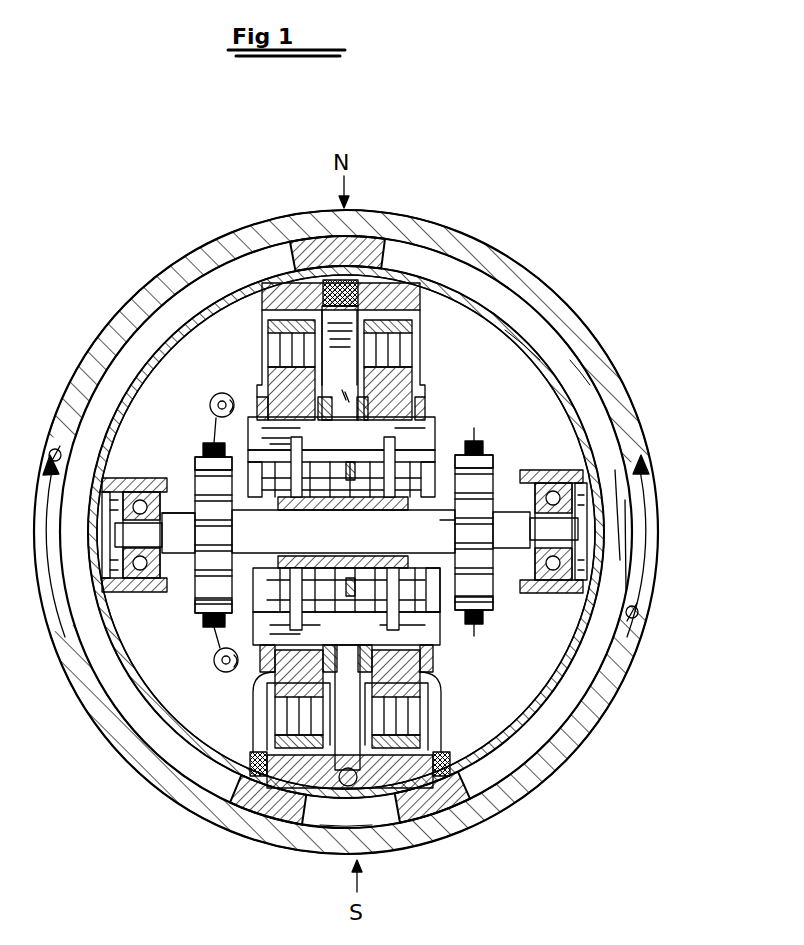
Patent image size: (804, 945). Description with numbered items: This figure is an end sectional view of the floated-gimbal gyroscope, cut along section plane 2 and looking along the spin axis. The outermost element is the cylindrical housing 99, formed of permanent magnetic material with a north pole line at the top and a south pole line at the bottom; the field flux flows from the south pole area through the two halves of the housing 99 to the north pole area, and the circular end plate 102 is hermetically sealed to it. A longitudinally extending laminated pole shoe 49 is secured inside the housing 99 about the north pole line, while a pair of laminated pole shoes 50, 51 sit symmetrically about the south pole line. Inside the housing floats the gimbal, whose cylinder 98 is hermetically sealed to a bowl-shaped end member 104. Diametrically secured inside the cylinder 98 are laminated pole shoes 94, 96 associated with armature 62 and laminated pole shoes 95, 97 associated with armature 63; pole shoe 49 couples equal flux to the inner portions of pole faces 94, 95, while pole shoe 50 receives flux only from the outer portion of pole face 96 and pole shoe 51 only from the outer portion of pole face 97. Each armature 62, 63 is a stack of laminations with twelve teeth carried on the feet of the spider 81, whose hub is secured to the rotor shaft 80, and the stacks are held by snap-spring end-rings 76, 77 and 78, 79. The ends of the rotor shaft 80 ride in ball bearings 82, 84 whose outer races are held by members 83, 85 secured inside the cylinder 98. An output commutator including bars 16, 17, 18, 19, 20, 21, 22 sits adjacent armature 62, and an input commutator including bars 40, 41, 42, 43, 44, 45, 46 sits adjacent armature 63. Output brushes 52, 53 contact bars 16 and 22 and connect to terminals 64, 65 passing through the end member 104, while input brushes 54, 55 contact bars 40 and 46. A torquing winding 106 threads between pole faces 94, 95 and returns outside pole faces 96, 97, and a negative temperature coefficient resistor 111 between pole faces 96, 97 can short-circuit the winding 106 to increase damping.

The section plane 2— 2 is at (225, 158).
The commutator bar 16 is at (196, 460).
The commutator bar 17 is at (262, 476).
The commutator bar 18 is at (195, 512).
The commutator bar 19 is at (360, 535).
The commutator bar 20 is at (195, 562).
The commutator bar 21 is at (262, 598).
The commutator bar 22 is at (203, 612).
The commutator bar 40 is at (494, 462).
The commutator bar 41 is at (404, 497).
The commutator bar 42 is at (493, 514).
The commutator bar 43 is at (460, 532).
The commutator bar 44 is at (500, 540).
The commutator bar 45 is at (426, 594).
The commutator bar 46 is at (488, 615).
The laminated pole shoe 49 is at (386, 254).
The laminated pole shoe 50 is at (238, 800).
The laminated pole shoe 51 is at (470, 800).
The output brush 52 is at (203, 445).
The output brush 53 is at (205, 627).
The input brush 54 is at (478, 440).
The input brush 55 is at (481, 628).
The armature 62 is at (285, 352).
The armature 63 is at (405, 348).
The hermetically sealed insulated terminal 64 is at (212, 388).
The hermetically sealed insulated terminal 65 is at (212, 672).
The snap-spring end-ring 76 is at (258, 400).
The snap-spring end-ring 77 is at (345, 405).
The snap-spring end-ring 78 is at (352, 385).
The snap-spring end-ring 79 is at (444, 386).
The rotor shaft 80 is at (590, 520).
The spider 81 is at (436, 426).
The ball bearing 82 is at (196, 478).
The bearing support member 83 is at (150, 598).
The ball bearing 84 is at (519, 498).
The bearing support member 85 is at (545, 600).
The laminated pole shoe 94 is at (265, 312).
The laminated pole shoe 95 is at (421, 326).
The laminated pole shoe 96 is at (262, 690).
The laminated pole shoe 97 is at (430, 695).
The cylinder 98 is at (558, 668).
The cylindrical housing 99 is at (158, 290).
The circular end plate 102 is at (585, 366).
The bowl-shaped end member 104 is at (530, 332).
The torquing winding 106 is at (300, 284).
The negative temperature coefficient resistor 111 is at (340, 800).